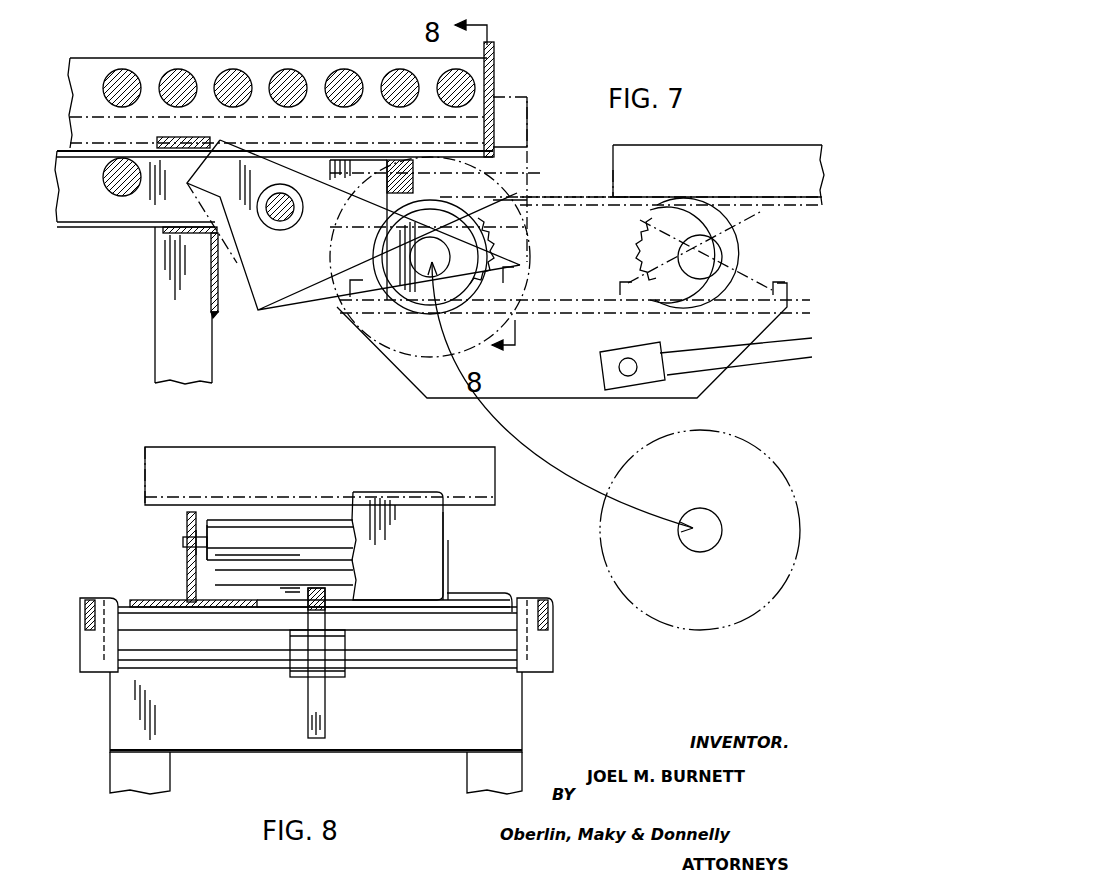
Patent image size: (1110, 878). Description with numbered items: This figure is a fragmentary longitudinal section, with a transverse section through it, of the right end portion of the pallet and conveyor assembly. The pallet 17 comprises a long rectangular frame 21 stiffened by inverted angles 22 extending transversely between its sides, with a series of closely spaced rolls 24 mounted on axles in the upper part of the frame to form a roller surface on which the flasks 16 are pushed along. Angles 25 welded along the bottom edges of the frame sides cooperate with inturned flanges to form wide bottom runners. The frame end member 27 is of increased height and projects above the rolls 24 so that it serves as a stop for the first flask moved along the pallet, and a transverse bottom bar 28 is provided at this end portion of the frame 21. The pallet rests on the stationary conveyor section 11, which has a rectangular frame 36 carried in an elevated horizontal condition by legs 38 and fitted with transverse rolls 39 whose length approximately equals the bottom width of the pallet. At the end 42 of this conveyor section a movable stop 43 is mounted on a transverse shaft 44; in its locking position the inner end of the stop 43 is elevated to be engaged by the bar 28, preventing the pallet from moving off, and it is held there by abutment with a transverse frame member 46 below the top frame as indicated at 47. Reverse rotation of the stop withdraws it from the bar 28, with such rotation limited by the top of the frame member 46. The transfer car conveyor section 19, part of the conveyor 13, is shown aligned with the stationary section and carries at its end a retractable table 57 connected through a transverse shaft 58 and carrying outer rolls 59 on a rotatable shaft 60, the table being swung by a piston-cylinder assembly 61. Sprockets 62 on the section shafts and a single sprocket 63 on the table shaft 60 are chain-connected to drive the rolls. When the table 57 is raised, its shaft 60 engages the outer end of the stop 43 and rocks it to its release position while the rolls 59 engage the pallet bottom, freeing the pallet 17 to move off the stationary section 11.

In FIG. 7, the stationary conveyor section 11 is at (103, 268).
In FIG. 8, the stationary conveyor section 11 is at (93, 713).
In FIG. 7, the conveyor 13 is at (812, 138).
In FIG. 8, the flask 16 is at (145, 460).
In FIG. 7, the pallet 17 is at (62, 86).
In FIG. 8, the pallet 17 is at (185, 519).
In FIG. 7, the conveyor section 19 is at (730, 143).
In FIG. 7, the rectangular frame 21 is at (268, 58).
In FIG. 8, the rectangular frame 21 is at (185, 553).
In FIG. 8, the inverted angles 22 is at (350, 578).
In FIG. 7, the roll 24 is at (136, 74).
In FIG. 8, the roll 24 is at (285, 523).
In FIG. 8, the angles 25 is at (150, 600).
In FIG. 7, the frame end member 27 is at (498, 62).
In FIG. 8, the frame end member 27 is at (420, 495).
In FIG. 7, the transverse bottom bar 28 is at (210, 140).
In FIG. 8, the transverse bottom bar 28 is at (352, 594).
In FIG. 7, the rectangular frame 36 is at (75, 215).
In FIG. 8, the rectangular frame 36 is at (80, 652).
In FIG. 7, the legs 38 is at (155, 362).
In FIG. 8, the legs 38 is at (110, 775).
In FIG. 7, the transverse rolls 39 is at (103, 177).
In FIG. 8, the transverse rolls 39 is at (380, 630).
In FIG. 7, the other end 42 is at (527, 160).
In FIG. 7, the movable stop 43 is at (300, 173).
In FIG. 8, the movable stop 43 is at (325, 707).
In FIG. 7, the transverse shaft 44 is at (286, 225).
In FIG. 8, the transverse shaft 44 is at (235, 675).
In FIG. 7, the transverse frame member 46 is at (220, 308).
In FIG. 8, the transverse frame member 46 is at (378, 748).
In FIG. 7, the abutment 47 is at (212, 270).
In FIG. 7, the retractable table 57 is at (577, 205).
In FIG. 7, the transverse shaft 58 is at (710, 258).
In FIG. 7, the outer rolls 59 is at (535, 288).
In FIG. 7, the shaft 60 is at (424, 270).
In FIG. 7, the piston-cylinder assembly 61 is at (755, 365).
In FIG. 7, the sprockets 62 is at (655, 275).
In FIG. 7, the sprocket 63 is at (520, 265).